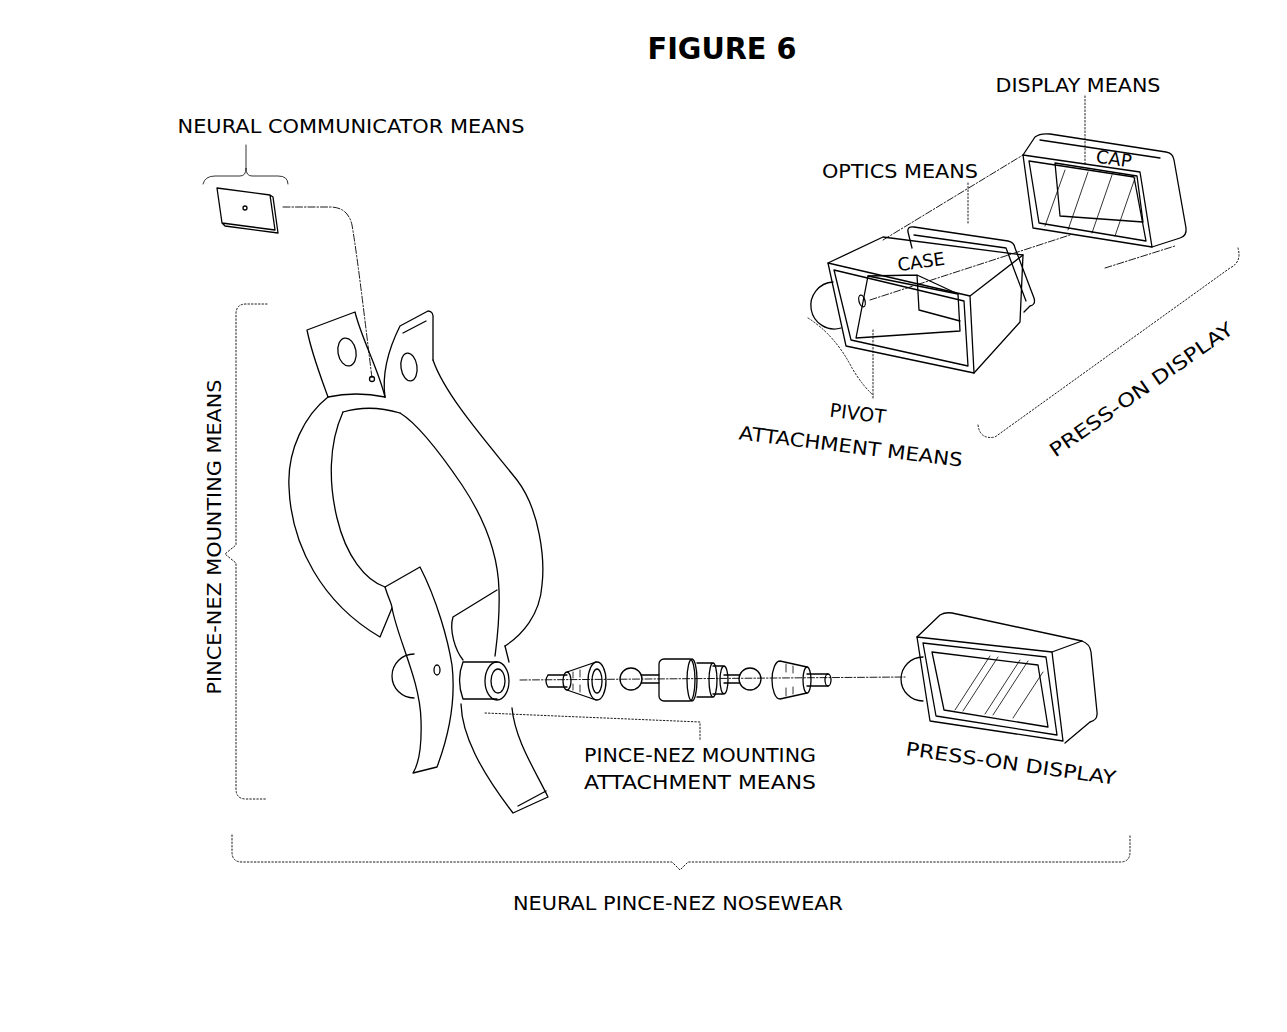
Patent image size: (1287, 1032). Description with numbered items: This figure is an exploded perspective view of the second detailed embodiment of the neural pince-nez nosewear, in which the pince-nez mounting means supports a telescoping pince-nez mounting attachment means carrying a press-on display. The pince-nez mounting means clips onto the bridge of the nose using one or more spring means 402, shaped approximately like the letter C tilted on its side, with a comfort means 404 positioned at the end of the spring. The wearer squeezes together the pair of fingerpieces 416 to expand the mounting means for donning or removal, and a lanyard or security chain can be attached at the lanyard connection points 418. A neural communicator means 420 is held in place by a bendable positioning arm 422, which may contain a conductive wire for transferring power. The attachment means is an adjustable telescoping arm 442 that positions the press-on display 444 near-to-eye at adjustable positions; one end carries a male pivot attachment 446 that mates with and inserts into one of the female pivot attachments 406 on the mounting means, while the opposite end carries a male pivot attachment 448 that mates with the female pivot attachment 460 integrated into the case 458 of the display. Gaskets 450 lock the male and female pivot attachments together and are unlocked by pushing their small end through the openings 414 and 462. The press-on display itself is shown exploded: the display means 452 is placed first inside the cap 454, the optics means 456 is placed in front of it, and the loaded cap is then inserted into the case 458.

The spring means 402 is at (527, 572).
The comfort means 404 is at (493, 787).
The pivot attachments 406 is at (480, 700).
The openings 414 is at (434, 667).
The fingerpieces 416 is at (352, 340).
The lanyard connection points 418 is at (415, 345).
The neural communicator means 420 is at (248, 235).
The bendable positioning arm 422 is at (345, 208).
The adjustable telescoping arm 442 is at (713, 670).
The press-on display 444 is at (1035, 640).
The pivot attachment 446 is at (637, 667).
The pivot attachment 448 is at (747, 668).
The gaskets 450 is at (585, 664).
The display means 452 is at (1107, 270).
The cap 454 is at (1060, 148).
The optics means 456 is at (1023, 327).
The case 458 is at (863, 255).
The pivot attachment 460 is at (912, 668).
The opening 462 is at (870, 306).